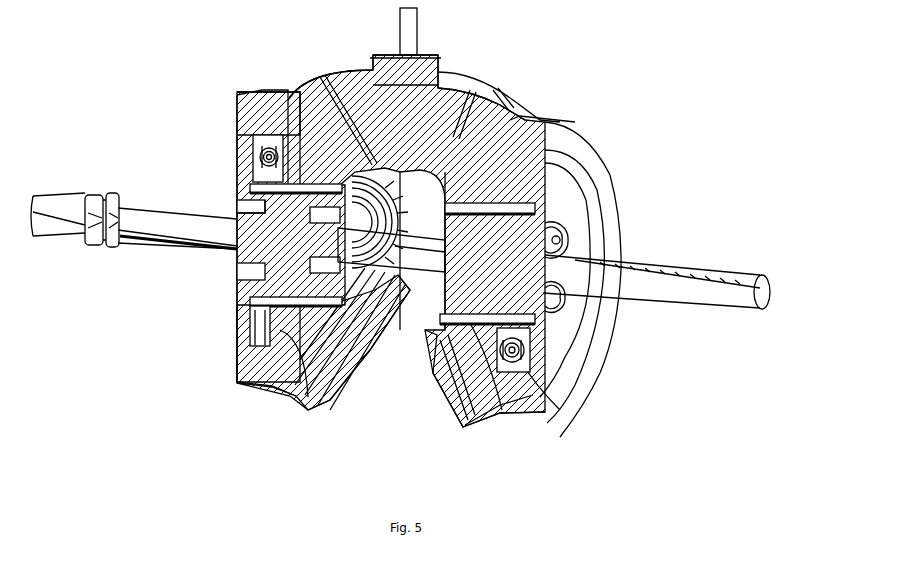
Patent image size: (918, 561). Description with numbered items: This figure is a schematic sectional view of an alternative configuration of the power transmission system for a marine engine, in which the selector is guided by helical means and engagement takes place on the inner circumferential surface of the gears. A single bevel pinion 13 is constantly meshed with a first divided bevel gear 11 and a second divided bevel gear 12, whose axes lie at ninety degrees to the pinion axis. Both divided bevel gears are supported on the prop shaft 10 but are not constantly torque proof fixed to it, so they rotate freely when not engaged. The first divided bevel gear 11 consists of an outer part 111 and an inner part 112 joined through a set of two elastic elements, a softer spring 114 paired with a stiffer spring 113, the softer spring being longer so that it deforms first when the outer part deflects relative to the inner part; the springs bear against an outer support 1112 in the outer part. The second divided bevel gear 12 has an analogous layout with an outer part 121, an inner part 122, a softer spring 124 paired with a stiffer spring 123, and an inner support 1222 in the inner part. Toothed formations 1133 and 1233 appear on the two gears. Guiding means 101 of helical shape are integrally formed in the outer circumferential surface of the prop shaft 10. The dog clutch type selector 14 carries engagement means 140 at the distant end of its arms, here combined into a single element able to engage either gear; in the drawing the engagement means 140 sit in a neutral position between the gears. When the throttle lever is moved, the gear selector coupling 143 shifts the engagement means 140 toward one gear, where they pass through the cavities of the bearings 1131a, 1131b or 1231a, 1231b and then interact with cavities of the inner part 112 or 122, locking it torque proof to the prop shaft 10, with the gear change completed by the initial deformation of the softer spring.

The prop shaft 10 is at (748, 286).
The guiding means 101 is at (682, 276).
The first divided bevel gear 11 is at (240, 80).
The outer part 111 is at (248, 383).
The inner part 112 is at (248, 186).
The stiffer spring 113 is at (243, 137).
The softer spring 114 is at (262, 158).
The outer support 1112 is at (262, 333).
The bearing 1131a is at (248, 235).
The bearing 1131b is at (245, 290).
The gear teeth 1133 is at (292, 396).
The second divided bevel gear 12 is at (578, 117).
The outer part 121 is at (574, 388).
The inner part 122 is at (578, 199).
The inner support 1222 is at (592, 160).
The stiffer spring 123 is at (548, 392).
The softer spring 124 is at (494, 395).
The bearing 1231a is at (531, 282).
The bearing 1231b is at (575, 333).
The gear teeth 1233 is at (460, 430).
The bevel pinion 13 is at (475, 66).
The dog clutch type selector 14 is at (106, 186).
The engagement means 140 is at (392, 270).
The gear selector coupling 143 is at (100, 245).